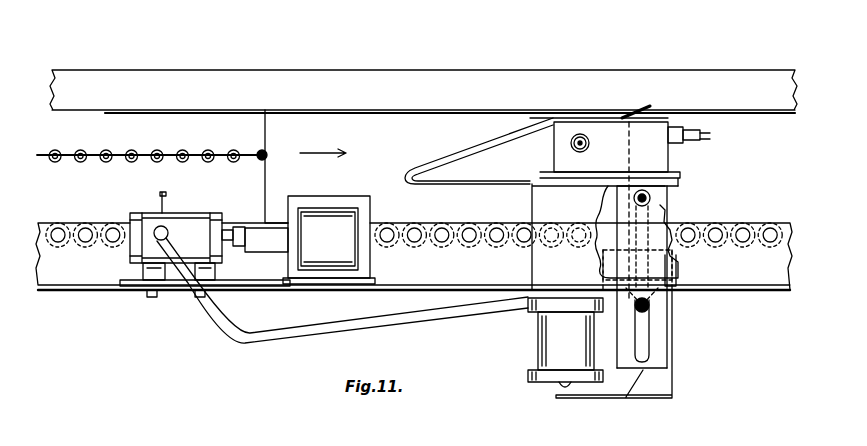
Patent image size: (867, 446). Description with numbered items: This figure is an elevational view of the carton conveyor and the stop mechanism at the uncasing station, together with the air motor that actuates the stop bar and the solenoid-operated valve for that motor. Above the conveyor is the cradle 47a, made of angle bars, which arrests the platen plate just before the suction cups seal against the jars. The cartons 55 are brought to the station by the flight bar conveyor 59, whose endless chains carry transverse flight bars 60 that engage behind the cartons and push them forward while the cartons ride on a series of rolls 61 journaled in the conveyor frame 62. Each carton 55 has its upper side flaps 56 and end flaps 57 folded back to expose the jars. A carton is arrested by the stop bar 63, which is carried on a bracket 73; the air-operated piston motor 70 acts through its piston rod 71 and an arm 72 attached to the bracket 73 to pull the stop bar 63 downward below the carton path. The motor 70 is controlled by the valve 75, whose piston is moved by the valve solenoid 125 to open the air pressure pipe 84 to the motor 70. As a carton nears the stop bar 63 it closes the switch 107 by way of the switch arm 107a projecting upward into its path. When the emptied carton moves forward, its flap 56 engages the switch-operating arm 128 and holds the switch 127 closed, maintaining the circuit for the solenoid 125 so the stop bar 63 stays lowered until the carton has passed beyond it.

The cradle 47a is at (479, 63).
The end flaps 57 is at (236, 102).
The flight bar conveyor 59 is at (172, 152).
The flight bars 60 is at (258, 149).
The carton 55 is at (398, 144).
The upper side flaps 56 is at (490, 118).
The switch 127 is at (656, 158).
The switch-operating arm 128 is at (640, 112).
The conveyor frame 62 is at (97, 277).
The rolls 61 is at (112, 242).
The valve 75 is at (195, 225).
The pressure pipe 84 is at (156, 200).
The valve solenoid 125 is at (333, 214).
The stop bar 63 is at (660, 214).
The switch 107 is at (600, 243).
The switch arm 107a is at (603, 210).
The air-operated piston motor 70 is at (550, 336).
The motor piston rod 71 is at (558, 386).
The arm 72 is at (663, 378).
The bracket 73 is at (672, 301).